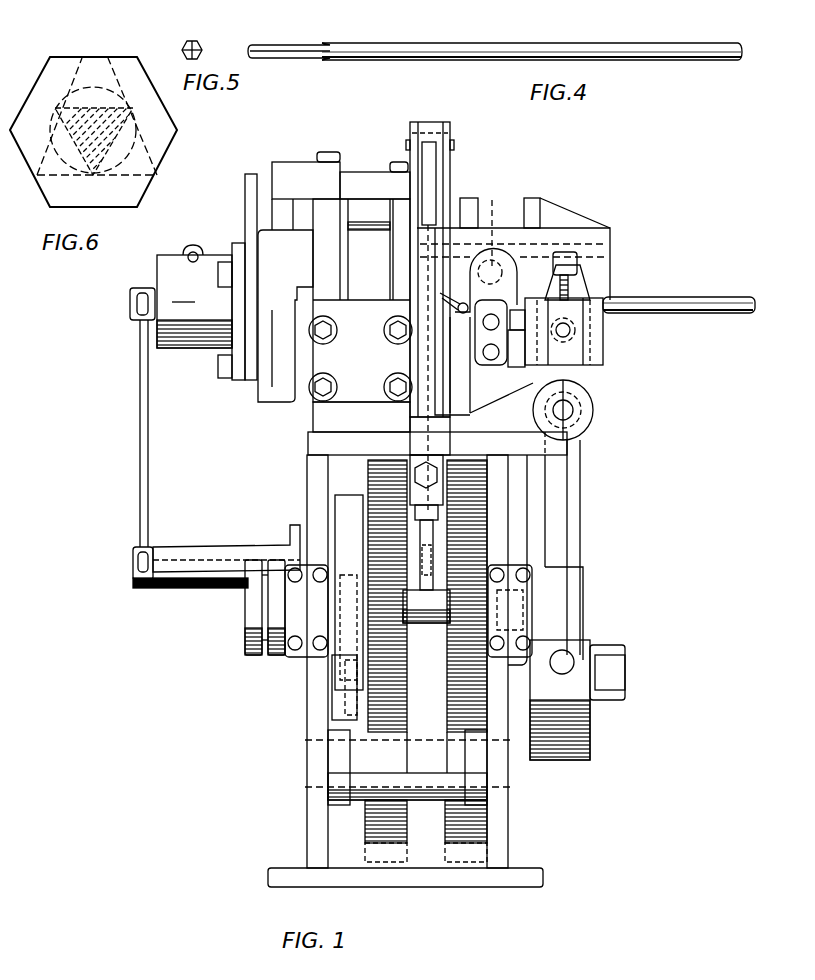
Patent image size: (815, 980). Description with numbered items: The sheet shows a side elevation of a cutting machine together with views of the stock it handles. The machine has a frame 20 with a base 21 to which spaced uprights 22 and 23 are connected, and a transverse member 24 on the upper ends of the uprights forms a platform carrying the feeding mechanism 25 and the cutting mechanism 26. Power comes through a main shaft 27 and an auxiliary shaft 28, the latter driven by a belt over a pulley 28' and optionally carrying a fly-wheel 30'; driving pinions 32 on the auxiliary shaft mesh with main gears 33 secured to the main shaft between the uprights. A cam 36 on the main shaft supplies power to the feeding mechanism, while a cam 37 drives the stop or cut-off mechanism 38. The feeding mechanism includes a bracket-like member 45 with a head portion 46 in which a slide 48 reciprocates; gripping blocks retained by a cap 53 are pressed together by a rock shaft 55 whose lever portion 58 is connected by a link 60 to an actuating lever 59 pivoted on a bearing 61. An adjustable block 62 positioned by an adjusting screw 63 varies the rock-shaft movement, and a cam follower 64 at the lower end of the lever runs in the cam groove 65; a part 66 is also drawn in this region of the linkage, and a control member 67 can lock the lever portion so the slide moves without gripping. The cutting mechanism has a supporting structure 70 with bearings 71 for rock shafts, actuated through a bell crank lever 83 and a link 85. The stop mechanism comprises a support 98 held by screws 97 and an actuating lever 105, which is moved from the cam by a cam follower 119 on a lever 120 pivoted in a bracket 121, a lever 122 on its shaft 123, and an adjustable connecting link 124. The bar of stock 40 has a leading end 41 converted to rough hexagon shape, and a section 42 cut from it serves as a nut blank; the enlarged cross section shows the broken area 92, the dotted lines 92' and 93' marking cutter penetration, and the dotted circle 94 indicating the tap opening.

In FIG. 1, the frame 20 is at (298, 715).
In FIG. 1, the base 21 is at (463, 882).
In FIG. 1, the upright 22 is at (307, 824).
In FIG. 1, the upright 23 is at (505, 818).
In FIG. 1, the transverse member 24 is at (318, 443).
In FIG. 1, the feeding mechanism 25 is at (560, 205).
In FIG. 1, the cutting mechanism 26 is at (352, 285).
In FIG. 1, the main shaft 27 is at (622, 660).
In FIG. 1, the auxiliary shaft 28 is at (328, 562).
In FIG. 1, the pulley 28' is at (226, 607).
In FIG. 1, the fly-wheel 30' is at (394, 590).
In FIG. 1, the driving pinion 32 is at (450, 625).
In FIG. 1, the main gear 33 is at (368, 478).
In FIG. 1, the cam 36 is at (590, 618).
In FIG. 1, the cam 37 is at (340, 702).
In FIG. 1, the stop mechanism 38 is at (233, 250).
In FIG. 4, the bar of stock 40 is at (530, 46).
In FIG. 1, the bar of stock 40 is at (698, 302).
In FIG. 4, the leading end 41 is at (272, 45).
In FIG. 6, the section 42 is at (72, 60).
In FIG. 5, the section 42 is at (199, 43).
In FIG. 1, the bracket-like member 45 is at (600, 283).
In FIG. 1, the head portion 46 is at (590, 236).
In FIG. 1, the slide 48 is at (577, 260).
In FIG. 1, the cap 53 is at (480, 365).
In FIG. 1, the rock shaft 55 is at (500, 226).
In FIG. 1, the lever portion 58 is at (500, 255).
In FIG. 1, the actuating lever 59 is at (580, 515).
In FIG. 1, the link 60 is at (527, 345).
In FIG. 1, the bearing 61 is at (594, 412).
In FIG. 1, the adjustable block 62 is at (603, 352).
In FIG. 1, the adjusting screw 63 is at (577, 292).
In FIG. 1, the cam follower 64 is at (570, 665).
In FIG. 1, the cam groove 65 is at (543, 575).
In FIG. 1, the lever 66 is at (515, 302).
In FIG. 1, the control member 67 is at (460, 300).
In FIG. 1, the supporting structure 70 is at (386, 430).
In FIG. 1, the bearing 71 is at (355, 405).
In FIG. 1, the lever 83 is at (445, 128).
In FIG. 1, the link 85 is at (443, 172).
In FIG. 6, the broken area 92 is at (102, 116).
In FIG. 6, the dotted lines 92' is at (136, 45).
In FIG. 6, the dotted lines 93' is at (106, 140).
In FIG. 6, the dotted circle 94 is at (128, 160).
In FIG. 1, the screw 97 is at (222, 380).
In FIG. 1, the support 98 is at (178, 350).
In FIG. 1, the actuating lever 105 is at (130, 312).
In FIG. 1, the cam follower 119 is at (345, 680).
In FIG. 1, the lever 120 is at (352, 565).
In FIG. 1, the bracket 121 is at (230, 552).
In FIG. 1, the lever 122 is at (133, 575).
In FIG. 1, the shaft 123 is at (195, 590).
In FIG. 1, the connecting link 124 is at (139, 455).